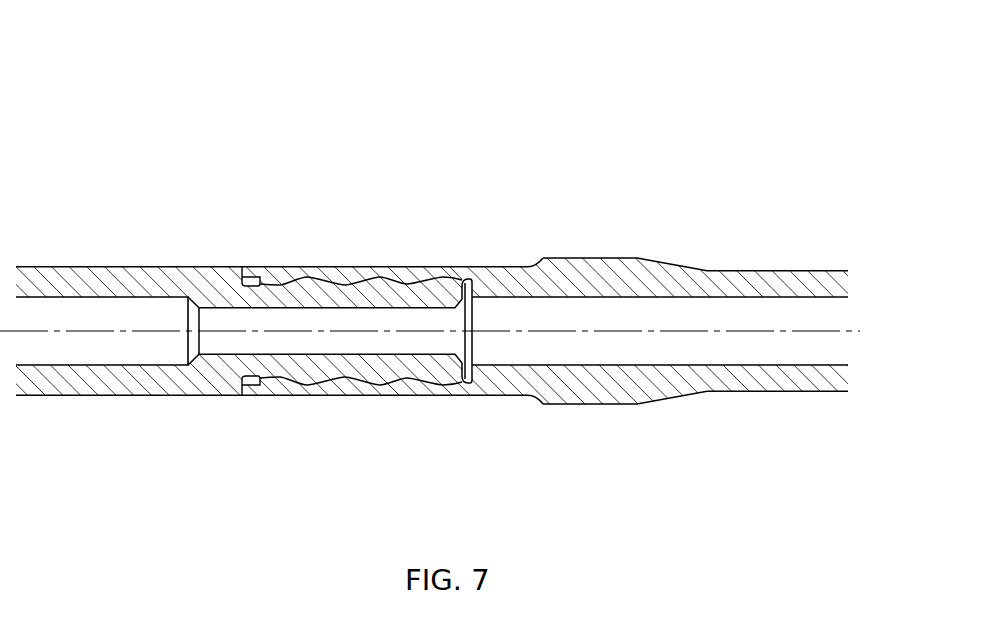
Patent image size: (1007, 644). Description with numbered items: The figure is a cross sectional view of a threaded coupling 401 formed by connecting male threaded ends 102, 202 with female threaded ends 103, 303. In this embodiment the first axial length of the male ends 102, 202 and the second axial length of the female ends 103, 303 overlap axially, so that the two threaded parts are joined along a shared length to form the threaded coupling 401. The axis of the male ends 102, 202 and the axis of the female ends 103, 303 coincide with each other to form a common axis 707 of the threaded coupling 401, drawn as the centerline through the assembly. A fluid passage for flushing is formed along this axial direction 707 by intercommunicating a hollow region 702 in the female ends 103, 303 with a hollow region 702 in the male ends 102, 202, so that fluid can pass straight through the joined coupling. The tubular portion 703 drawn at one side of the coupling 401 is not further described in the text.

The threaded coupling 401 is at (437, 125).
The first pipe 703 is at (148, 320).
The hollow region 702 is at (667, 315).
The male threaded end 102 is at (417, 292).
The male threaded end 202 is at (495, 267).
The female threaded end 103 is at (217, 293).
The female threaded end 303 is at (288, 284).
The axis 707 is at (456, 333).